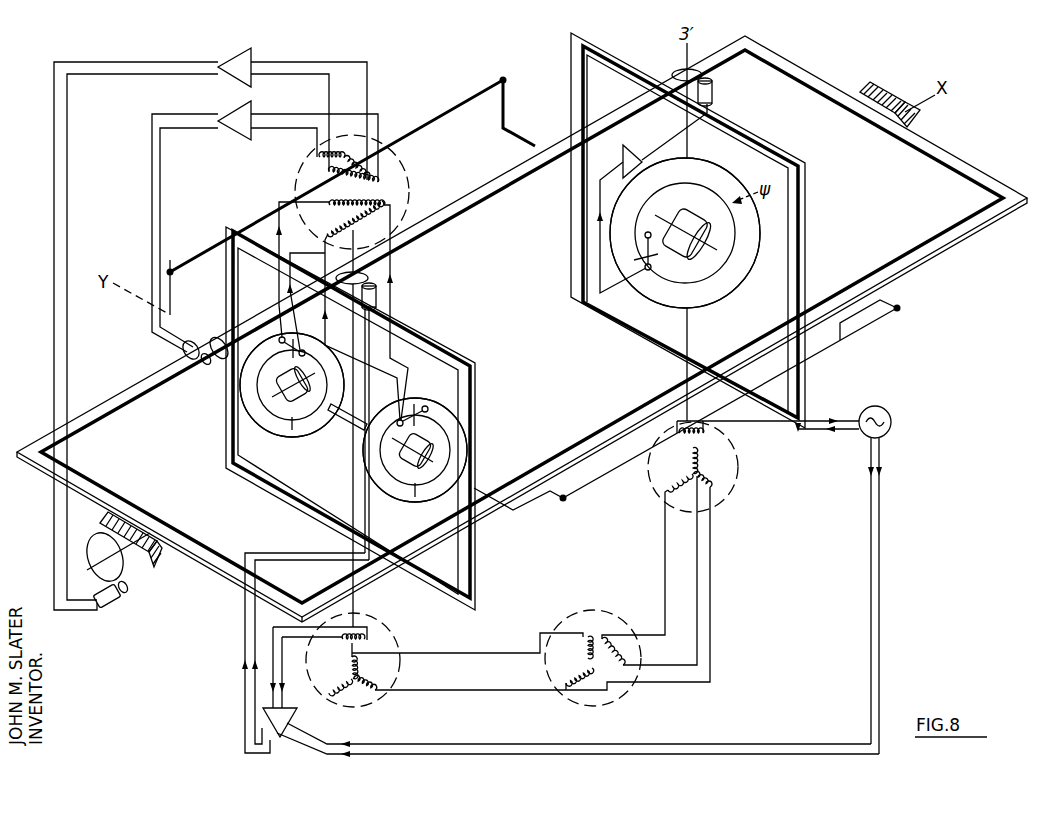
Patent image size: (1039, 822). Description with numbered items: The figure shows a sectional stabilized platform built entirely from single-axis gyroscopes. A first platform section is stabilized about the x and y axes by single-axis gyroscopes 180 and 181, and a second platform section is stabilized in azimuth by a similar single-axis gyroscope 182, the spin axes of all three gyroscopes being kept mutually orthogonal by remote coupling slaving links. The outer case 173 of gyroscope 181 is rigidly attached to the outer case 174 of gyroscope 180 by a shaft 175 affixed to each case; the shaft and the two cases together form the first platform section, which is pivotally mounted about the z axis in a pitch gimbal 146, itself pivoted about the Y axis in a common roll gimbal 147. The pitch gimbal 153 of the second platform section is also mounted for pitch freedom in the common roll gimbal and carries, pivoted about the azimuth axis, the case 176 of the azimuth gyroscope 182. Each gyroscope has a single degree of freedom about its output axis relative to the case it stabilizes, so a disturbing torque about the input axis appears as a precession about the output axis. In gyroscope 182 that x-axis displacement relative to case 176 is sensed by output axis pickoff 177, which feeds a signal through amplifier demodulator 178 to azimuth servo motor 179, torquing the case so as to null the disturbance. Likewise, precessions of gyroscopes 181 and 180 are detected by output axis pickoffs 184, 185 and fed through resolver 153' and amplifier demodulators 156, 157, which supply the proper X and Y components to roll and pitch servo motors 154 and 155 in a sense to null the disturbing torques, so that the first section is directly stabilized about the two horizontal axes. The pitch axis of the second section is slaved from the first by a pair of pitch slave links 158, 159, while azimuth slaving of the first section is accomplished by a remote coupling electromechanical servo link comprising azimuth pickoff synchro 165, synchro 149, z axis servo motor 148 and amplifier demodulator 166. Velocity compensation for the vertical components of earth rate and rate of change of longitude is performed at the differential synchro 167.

The pitch gimbal 146 is at (478, 389).
The roll gimbal 147 is at (190, 553).
The z axis servo motor 148 is at (378, 300).
The synchro 149 is at (383, 699).
The pitch gimbal 153 is at (714, 230).
The resolver 153' is at (379, 192).
The roll servo motor 154 is at (116, 601).
The pitch servo motor 155 is at (190, 366).
The amplifier demodulator 156 is at (238, 74).
The amplifier demodulator 157 is at (238, 128).
The pitch slave link 158 is at (872, 324).
The pitch slave link 159 is at (462, 106).
The azimuth pickoff synchro 165 is at (735, 450).
The amplifier demodulator 166 is at (298, 719).
The differential synchro 167 is at (623, 699).
The outer case 173 is at (266, 425).
The outer case 174 is at (427, 502).
The shaft 175 is at (345, 426).
The outer case 176 is at (755, 262).
The output axis pickoff 177 is at (637, 229).
The amplifier demodulator 178 is at (633, 146).
The azimuth servo motor 179 is at (714, 95).
The single-axis gyroscope 180 is at (390, 502).
The single-axis gyroscope 181 is at (303, 445).
The single-axis gyroscope 182 is at (713, 306).
The output axis pickoff 184 is at (284, 337).
The output axis pickoff 185 is at (403, 419).